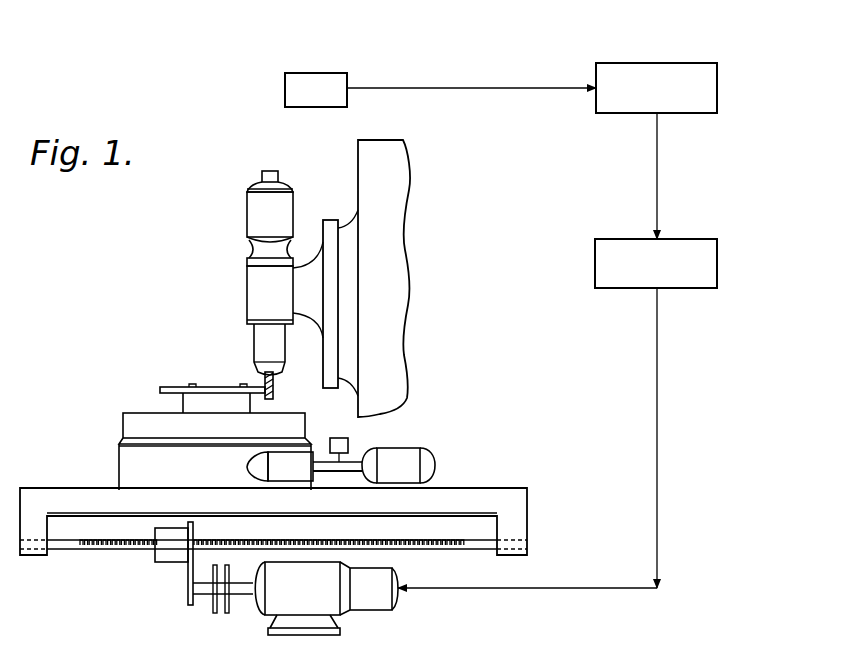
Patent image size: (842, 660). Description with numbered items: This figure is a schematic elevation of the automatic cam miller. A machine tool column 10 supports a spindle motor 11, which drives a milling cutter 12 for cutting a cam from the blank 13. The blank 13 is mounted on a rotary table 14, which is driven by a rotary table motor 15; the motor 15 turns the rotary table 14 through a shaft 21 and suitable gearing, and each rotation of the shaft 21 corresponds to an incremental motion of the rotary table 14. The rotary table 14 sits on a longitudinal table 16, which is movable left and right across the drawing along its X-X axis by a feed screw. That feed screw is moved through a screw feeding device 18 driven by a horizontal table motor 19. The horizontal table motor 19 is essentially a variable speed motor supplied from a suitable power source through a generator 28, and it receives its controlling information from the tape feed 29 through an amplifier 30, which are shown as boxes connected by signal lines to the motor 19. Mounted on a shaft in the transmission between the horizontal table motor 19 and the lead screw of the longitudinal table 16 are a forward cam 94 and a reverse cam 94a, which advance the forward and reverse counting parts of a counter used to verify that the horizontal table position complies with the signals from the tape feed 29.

The machine tool column 10 is at (368, 152).
The spindle motor 11 is at (255, 214).
The milling cutter 12 is at (274, 378).
The blank 13 is at (172, 388).
The rotary table 14 is at (128, 424).
The rotary table motor 15 is at (412, 452).
The longitudinal table 16 is at (455, 497).
The screw feeding device 18 is at (167, 568).
The horizontal table motor 19 is at (330, 608).
The shaft 21 is at (350, 462).
The generator 28 is at (676, 248).
The tape feed 29 is at (313, 84).
The amplifier 30 is at (650, 70).
The forward cam 94 is at (213, 612).
The reverse cam 94a is at (228, 612).